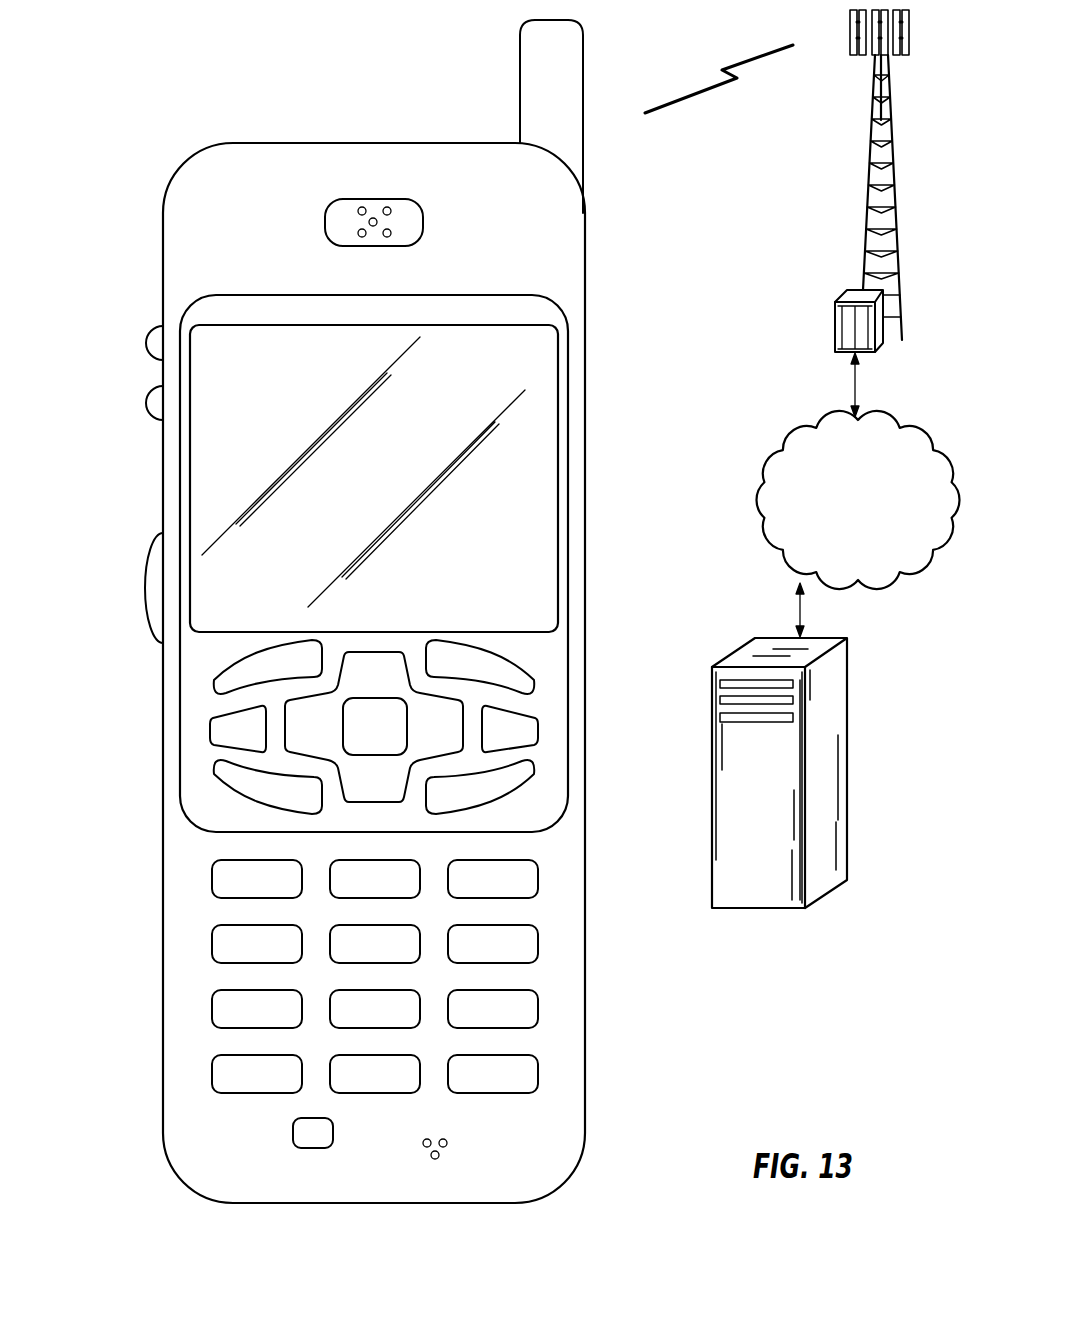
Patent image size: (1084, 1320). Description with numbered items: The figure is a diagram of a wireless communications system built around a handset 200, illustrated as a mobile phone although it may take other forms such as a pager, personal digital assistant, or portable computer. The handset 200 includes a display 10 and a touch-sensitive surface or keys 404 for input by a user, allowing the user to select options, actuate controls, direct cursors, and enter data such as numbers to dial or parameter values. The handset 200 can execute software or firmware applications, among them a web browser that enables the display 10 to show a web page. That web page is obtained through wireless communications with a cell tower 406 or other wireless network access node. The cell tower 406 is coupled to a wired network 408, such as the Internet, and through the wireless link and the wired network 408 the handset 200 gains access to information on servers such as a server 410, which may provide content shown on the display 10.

The handset 200 is at (387, 625).
The display 10 is at (557, 370).
The keys 404 is at (600, 641).
The cell tower 406 is at (869, 148).
The wired network 408 is at (878, 513).
The server 410 is at (778, 909).